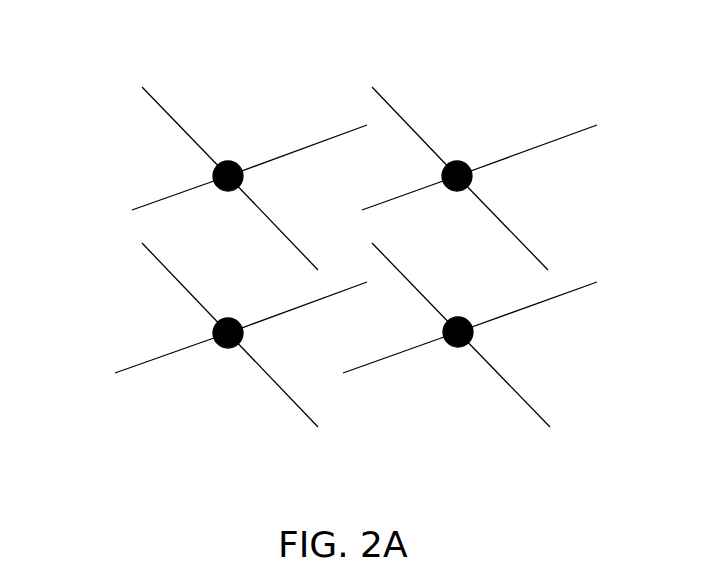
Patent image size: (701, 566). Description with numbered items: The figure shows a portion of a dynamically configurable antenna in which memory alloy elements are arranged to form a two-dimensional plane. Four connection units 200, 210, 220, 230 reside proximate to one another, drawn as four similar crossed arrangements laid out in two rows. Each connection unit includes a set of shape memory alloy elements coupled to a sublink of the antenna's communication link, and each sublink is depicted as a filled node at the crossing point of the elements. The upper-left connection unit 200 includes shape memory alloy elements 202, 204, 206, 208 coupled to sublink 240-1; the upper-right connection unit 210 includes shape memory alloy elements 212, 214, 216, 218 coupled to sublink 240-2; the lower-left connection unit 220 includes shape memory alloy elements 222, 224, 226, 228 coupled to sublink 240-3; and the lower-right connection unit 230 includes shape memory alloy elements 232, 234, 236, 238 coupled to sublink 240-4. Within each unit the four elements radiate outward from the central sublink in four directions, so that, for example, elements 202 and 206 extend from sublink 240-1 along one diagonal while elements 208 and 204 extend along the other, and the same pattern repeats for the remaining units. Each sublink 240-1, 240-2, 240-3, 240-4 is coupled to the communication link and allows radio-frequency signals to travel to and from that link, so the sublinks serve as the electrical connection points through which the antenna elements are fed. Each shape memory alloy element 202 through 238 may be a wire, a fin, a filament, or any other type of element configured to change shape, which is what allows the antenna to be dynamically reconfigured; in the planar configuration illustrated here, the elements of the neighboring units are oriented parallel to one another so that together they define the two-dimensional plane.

The connection unit 200 is at (213, 144).
The shape memory alloy element 202 is at (168, 118).
The shape memory alloy element 204 is at (323, 143).
The shape memory alloy element 206 is at (287, 243).
The shape memory alloy element 208 is at (140, 207).
The connection unit 210 is at (507, 146).
The shape memory alloy element 212 is at (397, 107).
The shape memory alloy element 214 is at (542, 145).
The shape memory alloy element 216 is at (505, 228).
The shape memory alloy element 218 is at (390, 198).
The connection unit 220 is at (194, 369).
The shape memory alloy element 222 is at (182, 288).
The shape memory alloy element 224 is at (328, 297).
The shape memory alloy element 226 is at (300, 402).
The shape memory alloy element 228 is at (145, 360).
The connection unit 230 is at (486, 376).
The shape memory alloy element 232 is at (407, 278).
The shape memory alloy element 234 is at (542, 305).
The shape memory alloy element 236 is at (522, 398).
The shape memory alloy element 238 is at (377, 362).
The sublink 240-1 is at (233, 161).
The sublink 240-2 is at (467, 161).
The sublink 240-3 is at (225, 348).
The sublink 240-4 is at (447, 347).